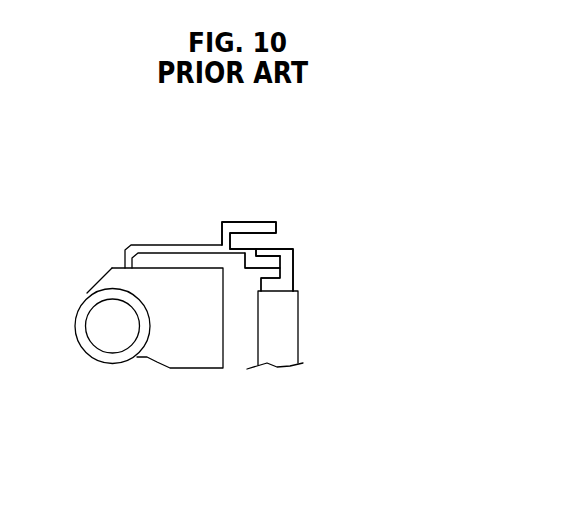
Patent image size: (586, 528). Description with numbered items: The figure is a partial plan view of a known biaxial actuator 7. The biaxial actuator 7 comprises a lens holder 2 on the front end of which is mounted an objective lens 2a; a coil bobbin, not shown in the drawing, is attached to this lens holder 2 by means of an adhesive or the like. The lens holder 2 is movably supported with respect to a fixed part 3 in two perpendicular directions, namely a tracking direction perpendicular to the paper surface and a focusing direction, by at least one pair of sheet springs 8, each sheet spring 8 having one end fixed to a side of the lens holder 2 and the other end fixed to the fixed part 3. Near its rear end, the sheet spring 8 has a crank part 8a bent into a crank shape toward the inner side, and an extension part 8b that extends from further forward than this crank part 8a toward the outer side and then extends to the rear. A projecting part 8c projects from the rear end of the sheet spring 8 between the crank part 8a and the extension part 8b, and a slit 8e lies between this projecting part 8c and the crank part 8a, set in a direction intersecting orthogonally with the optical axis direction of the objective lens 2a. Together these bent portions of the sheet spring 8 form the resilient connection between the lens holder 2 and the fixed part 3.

The lens holder 2 is at (200, 355).
The objective lens 2a is at (103, 322).
The fixed part 3 is at (283, 347).
The biaxial actuator 7 is at (304, 205).
The sheet spring 8 is at (163, 244).
The crank part 8a is at (243, 262).
The extension part 8b is at (242, 222).
The projecting part 8c is at (268, 247).
The slit 8e is at (253, 247).